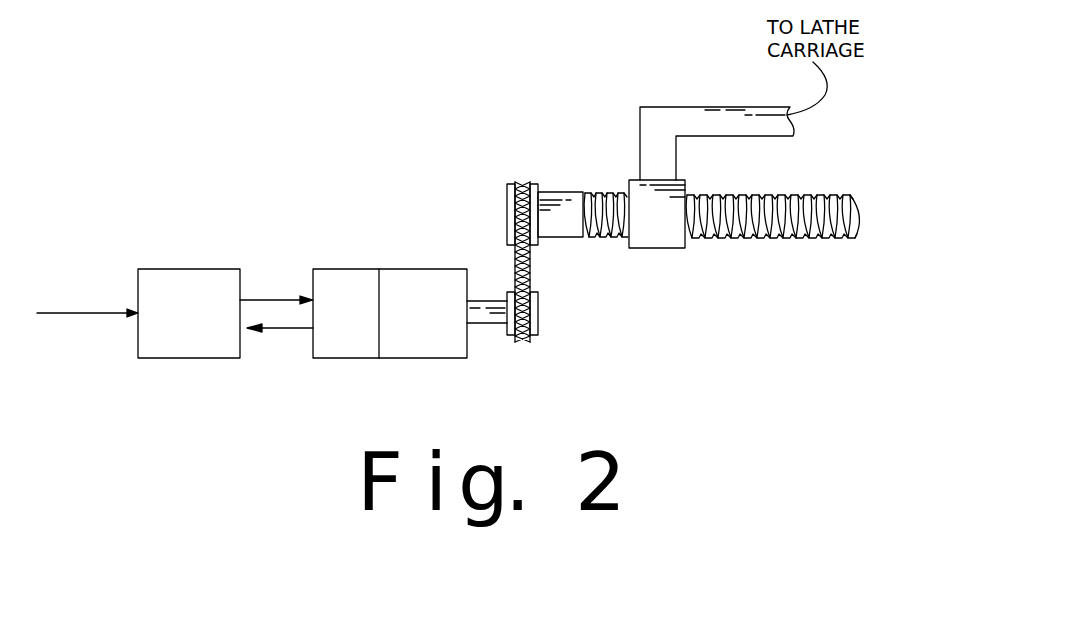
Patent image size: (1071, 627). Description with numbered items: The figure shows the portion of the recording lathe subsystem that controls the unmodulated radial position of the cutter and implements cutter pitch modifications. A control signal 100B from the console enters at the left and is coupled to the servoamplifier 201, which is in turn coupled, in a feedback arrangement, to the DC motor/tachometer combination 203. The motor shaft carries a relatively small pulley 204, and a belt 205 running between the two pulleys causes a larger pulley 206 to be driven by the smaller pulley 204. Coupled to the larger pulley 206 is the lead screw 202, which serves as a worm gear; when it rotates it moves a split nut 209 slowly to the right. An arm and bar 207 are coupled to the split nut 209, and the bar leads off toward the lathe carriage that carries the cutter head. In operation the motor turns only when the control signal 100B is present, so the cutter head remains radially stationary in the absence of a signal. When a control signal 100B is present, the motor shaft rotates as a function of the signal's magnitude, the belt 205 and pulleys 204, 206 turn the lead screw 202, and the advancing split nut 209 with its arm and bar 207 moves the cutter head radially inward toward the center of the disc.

The control signal 100B is at (80, 315).
The servoamplifier 201 is at (189, 268).
The lead screw 202 is at (624, 240).
The DC motor/tachometer combination 203 is at (385, 267).
The pulley 204 is at (538, 327).
The belt 205 is at (530, 265).
The pulley 206 is at (510, 184).
The arm and bar 207 is at (680, 107).
The split nut 209 is at (665, 243).